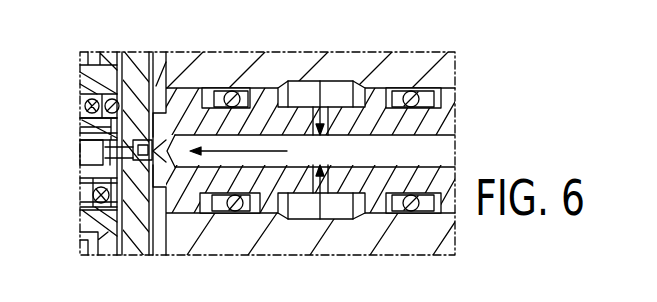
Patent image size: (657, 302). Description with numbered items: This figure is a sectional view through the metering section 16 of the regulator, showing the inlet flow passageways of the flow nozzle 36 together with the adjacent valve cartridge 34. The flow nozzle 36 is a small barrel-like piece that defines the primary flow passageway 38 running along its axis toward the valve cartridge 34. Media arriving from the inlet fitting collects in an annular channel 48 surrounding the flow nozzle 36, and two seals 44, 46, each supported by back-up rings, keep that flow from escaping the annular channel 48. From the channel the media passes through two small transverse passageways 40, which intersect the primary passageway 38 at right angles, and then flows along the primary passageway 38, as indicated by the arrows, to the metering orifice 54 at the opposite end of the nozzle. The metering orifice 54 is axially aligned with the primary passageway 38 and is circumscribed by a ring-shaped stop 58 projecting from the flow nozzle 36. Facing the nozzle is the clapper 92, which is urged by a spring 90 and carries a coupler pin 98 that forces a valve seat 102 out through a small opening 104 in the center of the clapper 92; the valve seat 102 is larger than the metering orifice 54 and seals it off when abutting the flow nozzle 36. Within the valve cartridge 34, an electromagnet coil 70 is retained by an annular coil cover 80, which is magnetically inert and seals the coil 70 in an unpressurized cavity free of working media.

The metering section 16 is at (371, 7).
The valve cartridge 34 is at (133, 63).
The flow nozzle 36 is at (395, 55).
The primary flow passageway 38 is at (432, 134).
The transverse passageways 40 is at (323, 135).
The seal 44 is at (228, 96).
The seal 46 is at (423, 97).
The annular channel 48 is at (330, 217).
The metering orifice 54 is at (163, 173).
The ring-shaped stop 58 is at (168, 62).
The electromagnet coil 70 is at (80, 243).
The coil cover 80 is at (108, 240).
The spring 90 is at (80, 197).
The clapper 92 is at (130, 238).
The coupler pin 98 is at (93, 148).
The valve seat 102 is at (103, 126).
The opening 104 is at (80, 79).